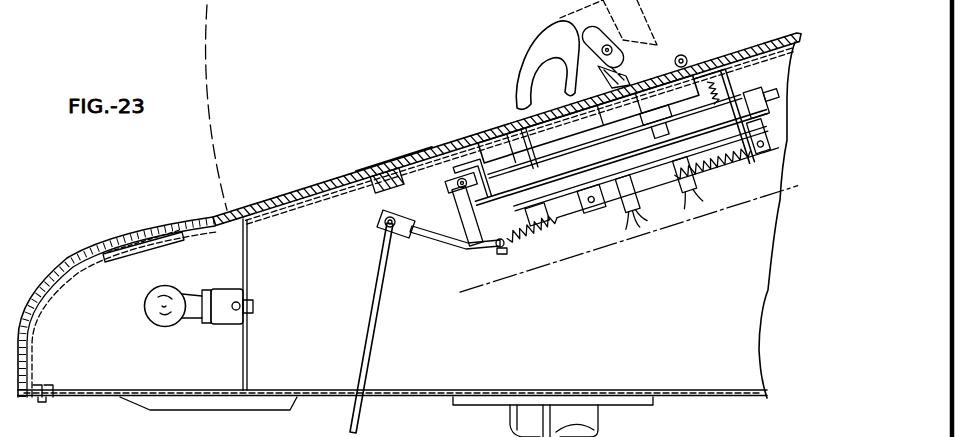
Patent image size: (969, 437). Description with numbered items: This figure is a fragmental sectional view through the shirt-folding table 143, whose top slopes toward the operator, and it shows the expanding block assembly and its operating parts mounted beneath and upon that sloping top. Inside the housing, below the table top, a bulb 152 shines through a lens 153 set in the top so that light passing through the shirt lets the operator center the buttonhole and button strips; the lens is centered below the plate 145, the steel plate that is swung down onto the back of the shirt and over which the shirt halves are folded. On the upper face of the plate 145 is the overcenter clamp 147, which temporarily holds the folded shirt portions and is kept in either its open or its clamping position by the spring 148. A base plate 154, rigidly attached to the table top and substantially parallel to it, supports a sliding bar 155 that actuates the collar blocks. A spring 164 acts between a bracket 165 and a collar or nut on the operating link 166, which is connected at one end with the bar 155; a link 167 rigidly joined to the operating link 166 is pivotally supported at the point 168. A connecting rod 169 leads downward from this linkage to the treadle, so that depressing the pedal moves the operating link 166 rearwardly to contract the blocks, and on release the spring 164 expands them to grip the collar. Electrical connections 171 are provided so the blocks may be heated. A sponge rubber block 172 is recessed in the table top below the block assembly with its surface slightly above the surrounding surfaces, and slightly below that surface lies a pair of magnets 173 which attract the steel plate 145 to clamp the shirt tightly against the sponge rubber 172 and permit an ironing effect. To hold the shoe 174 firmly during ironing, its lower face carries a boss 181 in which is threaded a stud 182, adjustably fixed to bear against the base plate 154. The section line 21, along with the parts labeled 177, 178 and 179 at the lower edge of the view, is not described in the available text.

The section line 21 is at (477, 299).
The pulpit type table 143 is at (684, 436).
The plate 145 is at (391, 156).
The overcenter clamp 147 is at (528, 55).
The spring 148 is at (640, 60).
The bulb 152 is at (146, 306).
The lens 153 is at (142, 232).
The base plate 154 is at (493, 200).
The sliding bar 155 is at (745, 97).
The spring 164 is at (680, 163).
The bracket 165 is at (733, 158).
The operating link 166 is at (565, 220).
The link 167 is at (462, 205).
The pivot point 168 is at (457, 183).
The connecting rod 169 is at (372, 327).
The electrical connections 171 is at (660, 207).
The sponge rubber block 172 is at (298, 186).
The magnets 173 is at (372, 193).
The shoe 174 is at (603, 104).
The plate 177 is at (442, 432).
The plate 178 is at (400, 432).
The plate 179 is at (484, 432).
The boss 181 is at (610, 143).
The stud 182 is at (648, 130).